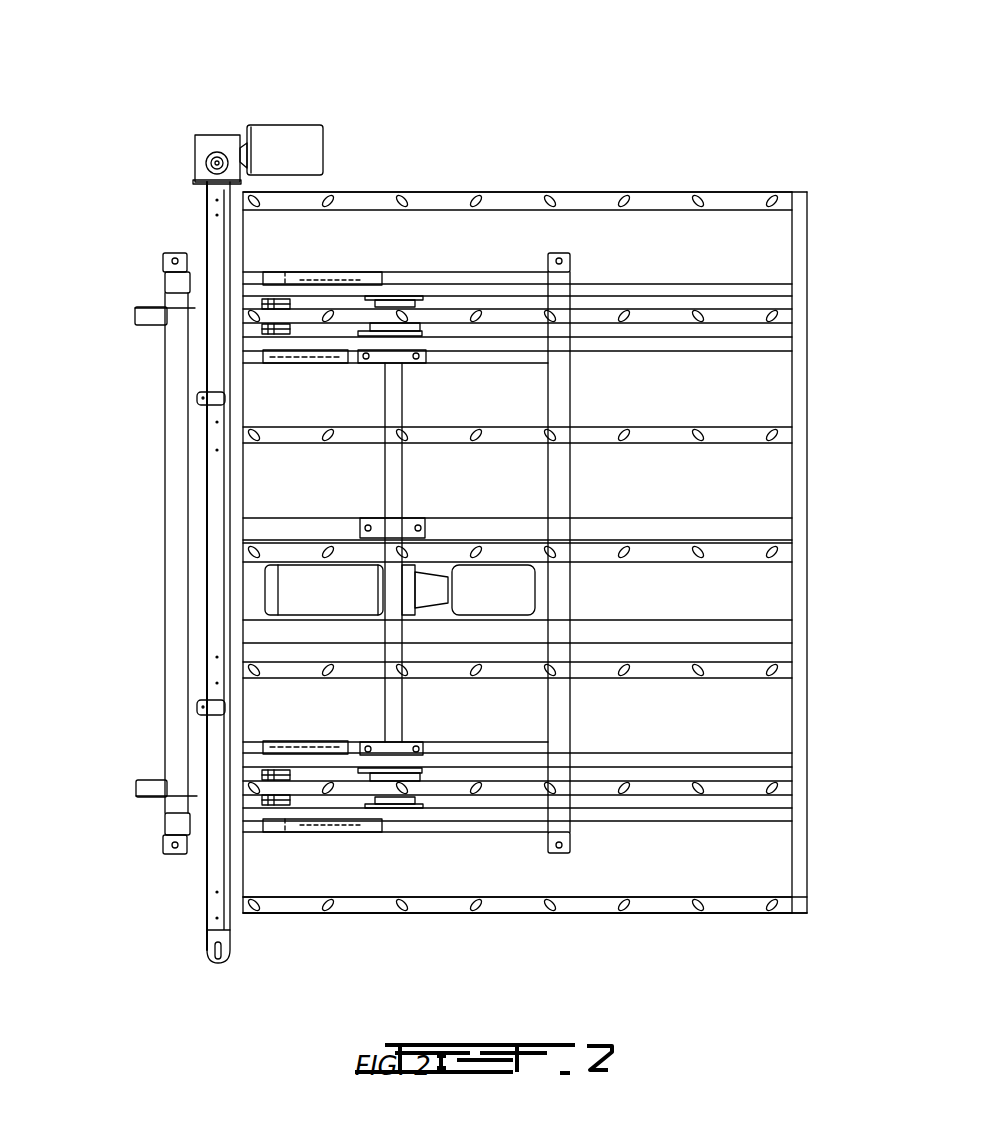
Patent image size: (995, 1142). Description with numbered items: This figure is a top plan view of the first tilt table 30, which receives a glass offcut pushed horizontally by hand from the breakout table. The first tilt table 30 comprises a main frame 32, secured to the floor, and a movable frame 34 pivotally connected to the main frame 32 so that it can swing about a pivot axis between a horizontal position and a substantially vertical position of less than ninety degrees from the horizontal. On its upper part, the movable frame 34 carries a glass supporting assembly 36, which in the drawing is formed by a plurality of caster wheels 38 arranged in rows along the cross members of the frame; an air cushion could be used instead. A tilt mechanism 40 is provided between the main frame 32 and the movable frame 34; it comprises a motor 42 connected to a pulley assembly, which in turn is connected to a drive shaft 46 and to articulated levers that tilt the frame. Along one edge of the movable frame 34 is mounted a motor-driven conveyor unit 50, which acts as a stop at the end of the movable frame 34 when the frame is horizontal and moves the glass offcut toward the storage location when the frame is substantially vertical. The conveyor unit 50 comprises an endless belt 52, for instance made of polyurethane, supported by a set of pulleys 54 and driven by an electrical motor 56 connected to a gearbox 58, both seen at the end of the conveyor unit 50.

The first tilt table 30 is at (119, 299).
The main frame 32 is at (178, 712).
The movable frame 34 is at (727, 905).
The glass supporting assembly 36 is at (818, 436).
The caster wheels 38 is at (780, 787).
The tilt mechanism 40 is at (590, 532).
The motor 42 is at (520, 595).
The drive shaft 46 is at (395, 476).
The motor-driven conveyor unit 50 is at (219, 968).
The endless belt 52 is at (207, 907).
The pulleys 54 is at (210, 158).
The electrical motor 56 is at (316, 130).
The gearbox 58 is at (216, 138).